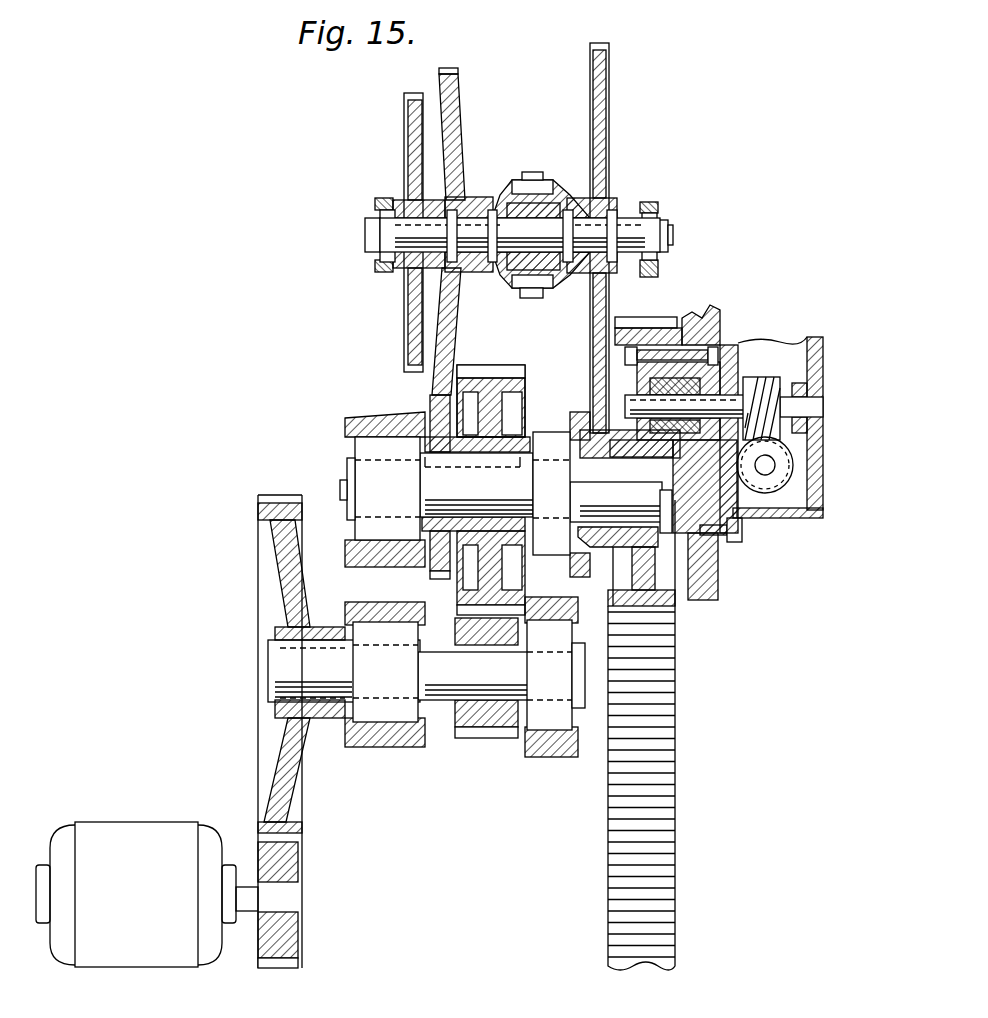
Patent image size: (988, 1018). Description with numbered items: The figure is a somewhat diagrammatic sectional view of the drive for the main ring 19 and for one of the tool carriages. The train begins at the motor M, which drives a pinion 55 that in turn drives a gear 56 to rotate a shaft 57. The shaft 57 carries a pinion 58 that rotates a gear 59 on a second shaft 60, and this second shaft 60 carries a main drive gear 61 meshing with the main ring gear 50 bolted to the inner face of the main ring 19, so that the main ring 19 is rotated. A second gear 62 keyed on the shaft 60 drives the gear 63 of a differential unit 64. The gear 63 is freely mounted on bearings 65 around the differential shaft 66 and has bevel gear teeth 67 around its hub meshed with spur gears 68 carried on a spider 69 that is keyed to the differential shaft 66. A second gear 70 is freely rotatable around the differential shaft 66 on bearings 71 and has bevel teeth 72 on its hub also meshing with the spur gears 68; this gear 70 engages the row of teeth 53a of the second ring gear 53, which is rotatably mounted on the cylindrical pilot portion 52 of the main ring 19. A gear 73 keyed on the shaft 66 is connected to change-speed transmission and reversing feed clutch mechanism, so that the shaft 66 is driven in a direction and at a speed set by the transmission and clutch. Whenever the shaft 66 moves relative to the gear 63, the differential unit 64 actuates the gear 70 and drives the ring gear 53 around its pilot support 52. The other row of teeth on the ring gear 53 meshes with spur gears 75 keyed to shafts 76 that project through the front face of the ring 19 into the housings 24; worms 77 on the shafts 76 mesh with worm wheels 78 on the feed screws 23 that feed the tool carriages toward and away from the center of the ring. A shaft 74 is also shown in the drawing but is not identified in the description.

The main ring 19 is at (724, 314).
The feed screw 23 is at (765, 478).
The housing 24 is at (795, 334).
The main ring gear 50 is at (655, 843).
The pilot portion 52 is at (588, 476).
The second ring gear 53 is at (626, 462).
The row of teeth 53a is at (585, 438).
The pinion 55 is at (302, 858).
The gear 56 is at (300, 784).
The shaft 57 is at (446, 712).
The pinion 58 is at (498, 740).
The gear 59 is at (500, 372).
The second shaft 60 is at (437, 488).
The main drive gear 61 is at (668, 592).
The second gear 62 is at (432, 405).
The gear 63 is at (450, 362).
The differential unit 64 is at (536, 171).
The bearings 65 is at (470, 198).
The differential shaft 66 is at (476, 272).
The bevel gear teeth 67 is at (502, 290).
The spur gears 68 is at (560, 195).
The spider 69 is at (531, 300).
The second gear 70 is at (602, 148).
The bearings 71 is at (606, 218).
The bevel teeth 72 is at (591, 302).
The gear 73 is at (404, 150).
The shaft 74 is at (520, 236).
The spur gears 75 is at (640, 362).
The shafts 76 is at (730, 400).
The worms 77 is at (772, 388).
The worm wheels 78 is at (780, 490).
The motor M is at (124, 840).